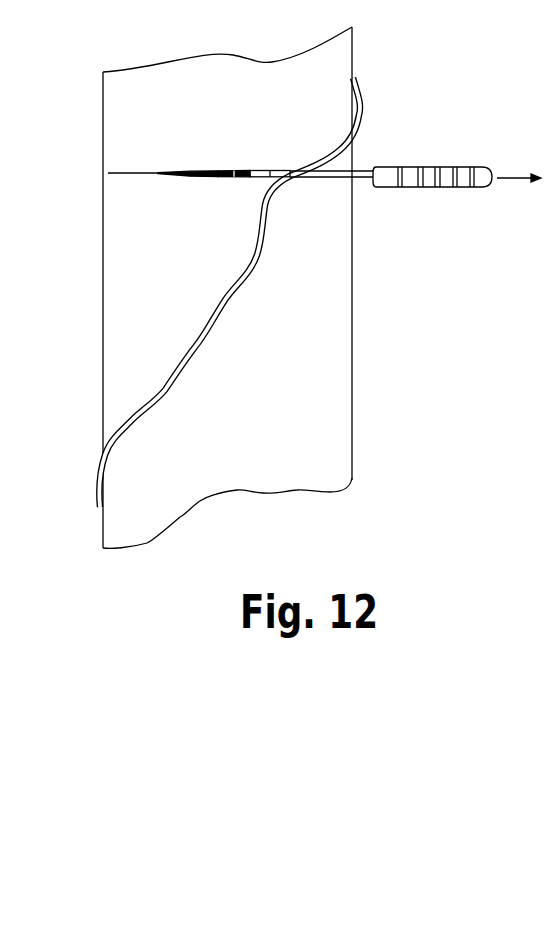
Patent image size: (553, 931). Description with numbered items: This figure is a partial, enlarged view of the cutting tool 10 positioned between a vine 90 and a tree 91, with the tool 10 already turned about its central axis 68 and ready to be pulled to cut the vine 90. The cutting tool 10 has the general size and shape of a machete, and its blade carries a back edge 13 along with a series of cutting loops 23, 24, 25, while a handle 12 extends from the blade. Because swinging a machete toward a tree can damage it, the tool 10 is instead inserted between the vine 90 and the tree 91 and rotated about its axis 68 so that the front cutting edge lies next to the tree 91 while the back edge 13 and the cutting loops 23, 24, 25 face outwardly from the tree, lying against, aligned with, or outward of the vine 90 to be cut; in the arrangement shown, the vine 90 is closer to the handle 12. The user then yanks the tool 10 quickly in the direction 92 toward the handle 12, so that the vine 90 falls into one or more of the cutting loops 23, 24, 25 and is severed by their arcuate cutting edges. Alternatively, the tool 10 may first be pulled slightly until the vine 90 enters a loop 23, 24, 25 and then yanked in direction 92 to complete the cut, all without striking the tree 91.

The cutting tool 10 is at (272, 167).
The handle 12 is at (423, 187).
The back edge 13 is at (330, 178).
The cutting loop 23 is at (273, 167).
The cutting loop 24 is at (240, 166).
The cutting loop 25 is at (205, 166).
The central axis 68 is at (131, 173).
The vine 90 is at (150, 412).
The tree 91 is at (135, 287).
The direction of pulling 92 is at (507, 181).